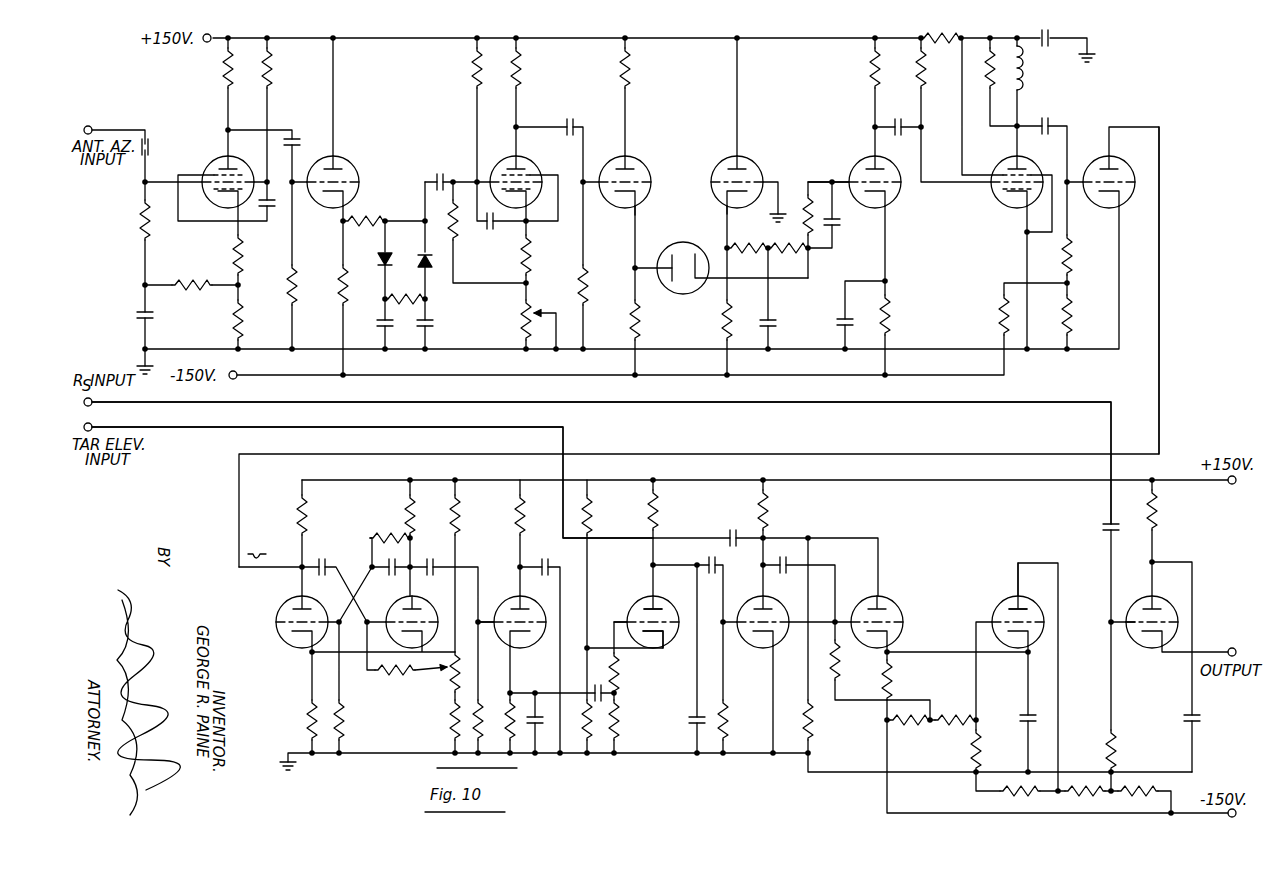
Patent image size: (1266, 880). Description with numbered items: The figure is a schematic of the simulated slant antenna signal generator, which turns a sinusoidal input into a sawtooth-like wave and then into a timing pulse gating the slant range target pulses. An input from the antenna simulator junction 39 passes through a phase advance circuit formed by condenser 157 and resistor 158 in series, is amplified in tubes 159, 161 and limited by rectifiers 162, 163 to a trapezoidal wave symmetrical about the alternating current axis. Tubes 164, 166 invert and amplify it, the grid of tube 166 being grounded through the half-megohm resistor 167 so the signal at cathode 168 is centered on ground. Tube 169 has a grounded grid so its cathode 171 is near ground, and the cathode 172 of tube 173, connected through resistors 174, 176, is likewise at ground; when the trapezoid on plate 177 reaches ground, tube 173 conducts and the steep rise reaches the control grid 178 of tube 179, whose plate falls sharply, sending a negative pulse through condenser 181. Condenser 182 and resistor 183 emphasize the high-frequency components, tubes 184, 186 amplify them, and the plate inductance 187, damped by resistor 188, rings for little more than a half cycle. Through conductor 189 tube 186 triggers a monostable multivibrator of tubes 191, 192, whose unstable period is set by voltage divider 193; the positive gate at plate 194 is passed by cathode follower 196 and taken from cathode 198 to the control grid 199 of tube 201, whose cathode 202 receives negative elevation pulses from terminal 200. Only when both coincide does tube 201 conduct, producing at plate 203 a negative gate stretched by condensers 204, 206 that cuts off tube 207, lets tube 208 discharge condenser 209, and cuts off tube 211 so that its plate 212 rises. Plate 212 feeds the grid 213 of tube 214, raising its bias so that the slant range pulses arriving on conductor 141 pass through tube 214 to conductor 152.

The antenna simulator junction 39 is at (90, 126).
The conductor 141 is at (110, 408).
The conductor 152 is at (1220, 645).
The condenser 157 is at (148, 146).
The resistor 158 is at (141, 220).
The tube 159 is at (214, 160).
The tube 161 is at (348, 163).
The rectifier 162 is at (380, 252).
The rectifier 163 is at (422, 252).
The tube 164 is at (500, 158).
The tube 166 is at (641, 163).
The resistor 167 is at (590, 280).
The cathode 168 is at (645, 207).
The tube 169 is at (757, 162).
The cathode 171 is at (724, 204).
The cathode 172 is at (700, 282).
The tube 173 is at (686, 244).
The resistor 174 is at (760, 237).
The resistor 176 is at (808, 238).
The plate 177 is at (670, 282).
The control grid 178 is at (846, 176).
The tube 179 is at (858, 152).
The condenser 181 is at (895, 120).
The condenser 182 is at (843, 318).
The resistor 183 is at (890, 316).
The tube 184 is at (1003, 158).
The tube 186 is at (1096, 149).
The plate inductance 187 is at (1024, 78).
The resistor 188 is at (988, 80).
The conductor 189 is at (1159, 125).
The tube 191 is at (282, 603).
The tube 192 is at (450, 662).
The voltage divider 193 is at (436, 678).
The plate 194 is at (405, 602).
The cathode follower 196 is at (510, 600).
The cathode 198 is at (500, 632).
The control grid 199 is at (634, 618).
The terminal 200 is at (150, 430).
The tube 201 is at (646, 594).
The cathode 202 is at (670, 638).
The plate 203 is at (662, 604).
The condenser 204 is at (728, 536).
The condenser 206 is at (692, 716).
The tube 207 is at (748, 600).
The tube 208 is at (893, 600).
The condenser 209 is at (1022, 712).
The tube 211 is at (1002, 598).
The plate 212 is at (1022, 605).
The grid 213 is at (1134, 628).
The tube 214 is at (1138, 602).